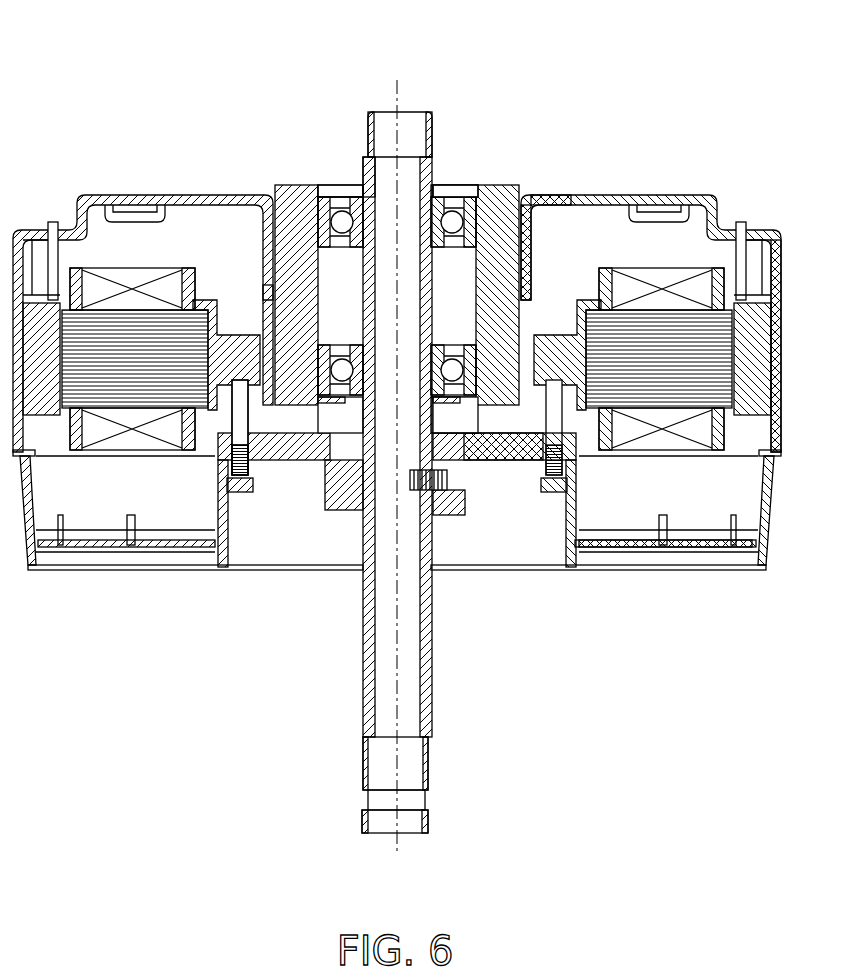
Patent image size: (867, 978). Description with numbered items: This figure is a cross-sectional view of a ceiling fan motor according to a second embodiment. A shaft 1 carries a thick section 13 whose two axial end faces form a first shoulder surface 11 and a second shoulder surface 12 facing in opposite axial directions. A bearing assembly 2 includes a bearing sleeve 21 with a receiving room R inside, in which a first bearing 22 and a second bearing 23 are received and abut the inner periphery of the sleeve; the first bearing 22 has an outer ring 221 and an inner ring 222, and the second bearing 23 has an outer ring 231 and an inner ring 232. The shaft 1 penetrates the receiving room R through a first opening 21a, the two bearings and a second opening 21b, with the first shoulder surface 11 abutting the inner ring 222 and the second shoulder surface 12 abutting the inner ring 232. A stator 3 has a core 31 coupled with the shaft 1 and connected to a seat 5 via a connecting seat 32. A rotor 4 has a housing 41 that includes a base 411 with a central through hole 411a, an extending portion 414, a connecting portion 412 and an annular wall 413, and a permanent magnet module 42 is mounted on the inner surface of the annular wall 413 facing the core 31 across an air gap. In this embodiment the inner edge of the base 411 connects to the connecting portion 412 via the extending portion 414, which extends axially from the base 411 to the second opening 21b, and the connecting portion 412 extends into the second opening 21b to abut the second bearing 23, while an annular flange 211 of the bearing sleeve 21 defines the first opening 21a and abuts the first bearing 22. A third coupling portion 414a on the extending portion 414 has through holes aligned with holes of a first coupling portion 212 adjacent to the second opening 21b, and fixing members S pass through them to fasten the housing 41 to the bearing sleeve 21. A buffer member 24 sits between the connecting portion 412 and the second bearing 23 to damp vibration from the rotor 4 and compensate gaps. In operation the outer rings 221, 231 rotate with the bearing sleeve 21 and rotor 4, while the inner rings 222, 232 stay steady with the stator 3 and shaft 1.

The shaft 1 is at (401, 467).
The first shoulder surface 11 is at (362, 263).
The second shoulder surface 12 is at (355, 480).
The thick section 13 is at (285, 213).
The bearing assembly 2 is at (371, 344).
The bearing sleeve 21 is at (326, 315).
The first opening 21a is at (453, 192).
The second opening 21b is at (445, 460).
The annular flange 211 is at (471, 197).
The first coupling portion 212 is at (250, 420).
The first bearing 22 is at (442, 206).
The outer ring 221 is at (521, 197).
The inner ring 222 is at (402, 195).
The second bearing 23 is at (499, 532).
The outer ring 231 is at (522, 420).
The inner ring 232 is at (430, 492).
The buffer member 24 is at (345, 425).
The stator 3 is at (161, 484).
The core 31 is at (108, 380).
The connecting seat 32 is at (197, 442).
The rotor 4 is at (421, 360).
The housing 41 is at (421, 384).
The base 411 is at (138, 197).
The through hole 411a is at (530, 200).
The connecting portion 412 is at (305, 440).
The annular wall 413 is at (775, 295).
The extending portion 414 is at (560, 200).
The third coupling portion 414a is at (270, 405).
The permanent magnet module 42 is at (740, 225).
The seat 5 is at (757, 537).
The receiving room R is at (307, 277).
The fixing members S is at (320, 400).